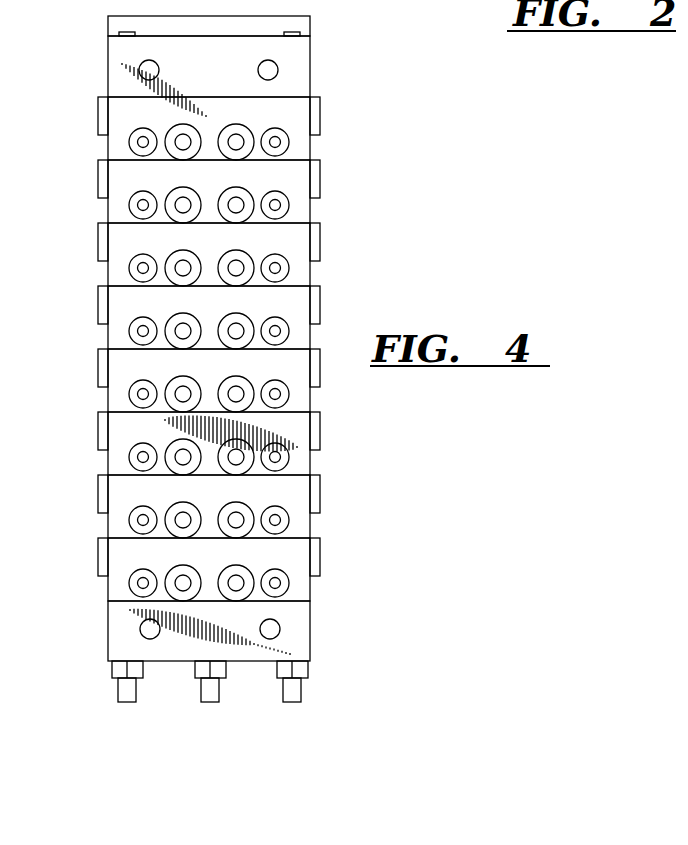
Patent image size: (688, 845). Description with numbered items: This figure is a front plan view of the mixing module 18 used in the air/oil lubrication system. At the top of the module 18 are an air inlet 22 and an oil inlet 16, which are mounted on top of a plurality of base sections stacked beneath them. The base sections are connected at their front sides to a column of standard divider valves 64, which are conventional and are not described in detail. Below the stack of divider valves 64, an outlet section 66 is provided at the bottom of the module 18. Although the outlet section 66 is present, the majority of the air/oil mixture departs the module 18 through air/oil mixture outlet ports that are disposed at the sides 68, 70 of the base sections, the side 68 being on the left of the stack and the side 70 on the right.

The mixing module 18 is at (243, 351).
The air inlet 22 is at (163, 16).
The oil inlet 16 is at (108, 33).
The side of the base sections 70 is at (312, 149).
The side of the base sections 68 is at (98, 137).
The divider valves 64 is at (118, 242).
The outlet section 66 is at (125, 626).